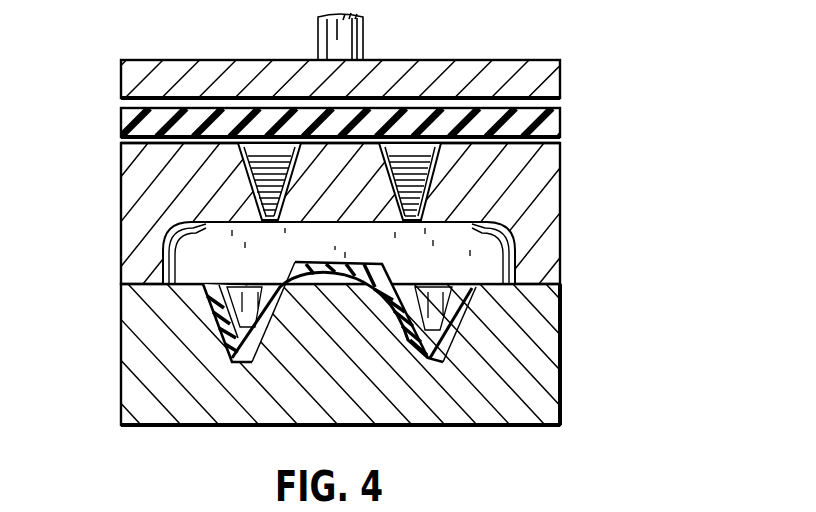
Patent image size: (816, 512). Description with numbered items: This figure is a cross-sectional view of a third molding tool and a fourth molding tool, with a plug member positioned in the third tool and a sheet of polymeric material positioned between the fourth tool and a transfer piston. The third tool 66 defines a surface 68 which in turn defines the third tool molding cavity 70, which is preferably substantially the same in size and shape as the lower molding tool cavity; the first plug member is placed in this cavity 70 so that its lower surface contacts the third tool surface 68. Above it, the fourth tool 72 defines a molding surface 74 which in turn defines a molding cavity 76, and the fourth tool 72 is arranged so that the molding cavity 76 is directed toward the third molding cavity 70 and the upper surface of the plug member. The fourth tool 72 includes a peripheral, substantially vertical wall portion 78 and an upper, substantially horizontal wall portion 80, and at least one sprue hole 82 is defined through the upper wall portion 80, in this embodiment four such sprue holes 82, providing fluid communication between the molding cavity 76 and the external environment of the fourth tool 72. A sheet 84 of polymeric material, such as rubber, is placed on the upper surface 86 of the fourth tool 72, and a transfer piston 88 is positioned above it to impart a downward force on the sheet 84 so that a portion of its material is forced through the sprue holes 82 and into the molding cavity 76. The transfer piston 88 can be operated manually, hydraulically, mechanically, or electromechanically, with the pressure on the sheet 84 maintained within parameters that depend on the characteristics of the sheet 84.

The third tool 66 is at (560, 400).
The third tool surface 68 is at (450, 358).
The third tool molding cavity 70 is at (433, 300).
The fourth tool 72 is at (560, 210).
The molding surface 74 is at (515, 259).
The fourth tool molding cavity 76 is at (221, 260).
The peripheral, substantially vertical wall portion 78 is at (163, 278).
The upper, substantially horizontal wall portion 80 is at (214, 221).
The sprue hole 82 is at (272, 172).
The sheet of polymeric material 84 is at (560, 128).
The upper surface 86 is at (560, 146).
The transfer piston 88 is at (560, 78).